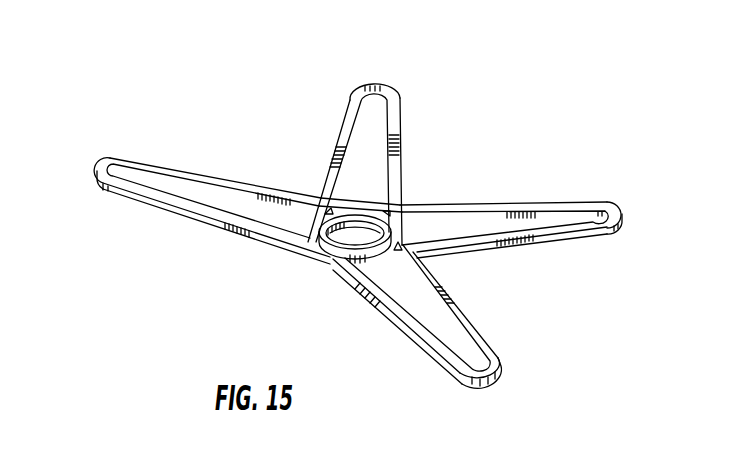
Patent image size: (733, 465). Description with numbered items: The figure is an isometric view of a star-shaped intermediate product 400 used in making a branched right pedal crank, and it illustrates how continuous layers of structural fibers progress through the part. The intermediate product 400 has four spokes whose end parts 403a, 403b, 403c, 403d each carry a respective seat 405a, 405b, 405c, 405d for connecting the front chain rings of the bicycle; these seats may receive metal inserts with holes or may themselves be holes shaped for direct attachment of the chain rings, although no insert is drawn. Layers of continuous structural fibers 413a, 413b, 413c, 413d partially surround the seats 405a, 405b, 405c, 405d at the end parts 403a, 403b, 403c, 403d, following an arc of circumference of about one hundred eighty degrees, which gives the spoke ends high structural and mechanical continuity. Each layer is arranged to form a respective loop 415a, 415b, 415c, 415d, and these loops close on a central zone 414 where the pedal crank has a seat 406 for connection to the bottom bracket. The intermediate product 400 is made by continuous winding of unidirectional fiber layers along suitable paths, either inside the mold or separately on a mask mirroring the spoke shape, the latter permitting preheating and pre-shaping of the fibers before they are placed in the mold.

The intermediate product 400 is at (76, 109).
The end part of spoke 403a is at (100, 198).
The end part of spoke 403b is at (436, 102).
The end part of spoke 403c is at (614, 192).
The end part of spoke 403d is at (492, 393).
The seat 405a is at (118, 166).
The seat 405b is at (378, 92).
The seat 405c is at (619, 219).
The seat 405d is at (474, 366).
The seat for connecting to the bottom bracket 406 is at (347, 241).
The layer of continuous structural fibers 413a is at (97, 171).
The layer of continuous structural fibers 413b is at (368, 84).
The layer of continuous structural fibers 413c is at (618, 204).
The layer of continuous structural fibers 413d is at (500, 358).
The central zone 414 is at (283, 293).
The loop 415a is at (205, 246).
The loop 415b is at (333, 127).
The loop 415c is at (499, 193).
The loop 415d is at (481, 312).